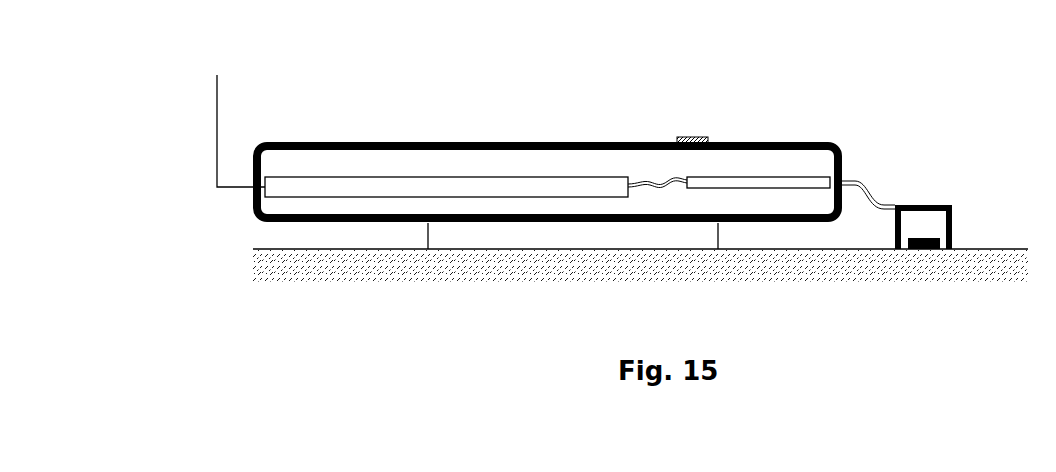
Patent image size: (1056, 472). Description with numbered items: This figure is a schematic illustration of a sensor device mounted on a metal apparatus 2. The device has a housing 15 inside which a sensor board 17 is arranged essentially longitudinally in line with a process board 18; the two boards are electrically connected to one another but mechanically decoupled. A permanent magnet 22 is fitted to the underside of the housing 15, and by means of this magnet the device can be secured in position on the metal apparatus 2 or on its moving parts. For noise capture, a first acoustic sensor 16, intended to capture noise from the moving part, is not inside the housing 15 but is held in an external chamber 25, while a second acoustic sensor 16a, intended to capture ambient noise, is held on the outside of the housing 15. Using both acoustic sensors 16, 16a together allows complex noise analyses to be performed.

The metal apparatus 2 is at (397, 273).
The housing 15 is at (253, 202).
The first acoustic sensor 16 is at (933, 237).
The second acoustic sensor 16a is at (700, 138).
The sensor board 17 is at (686, 178).
The process board 18 is at (423, 192).
The permanent magnet 22 is at (495, 252).
The external chamber 25 is at (905, 203).